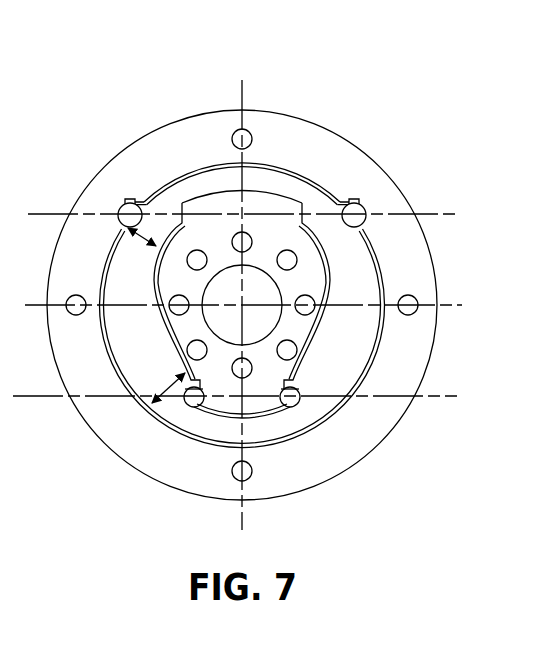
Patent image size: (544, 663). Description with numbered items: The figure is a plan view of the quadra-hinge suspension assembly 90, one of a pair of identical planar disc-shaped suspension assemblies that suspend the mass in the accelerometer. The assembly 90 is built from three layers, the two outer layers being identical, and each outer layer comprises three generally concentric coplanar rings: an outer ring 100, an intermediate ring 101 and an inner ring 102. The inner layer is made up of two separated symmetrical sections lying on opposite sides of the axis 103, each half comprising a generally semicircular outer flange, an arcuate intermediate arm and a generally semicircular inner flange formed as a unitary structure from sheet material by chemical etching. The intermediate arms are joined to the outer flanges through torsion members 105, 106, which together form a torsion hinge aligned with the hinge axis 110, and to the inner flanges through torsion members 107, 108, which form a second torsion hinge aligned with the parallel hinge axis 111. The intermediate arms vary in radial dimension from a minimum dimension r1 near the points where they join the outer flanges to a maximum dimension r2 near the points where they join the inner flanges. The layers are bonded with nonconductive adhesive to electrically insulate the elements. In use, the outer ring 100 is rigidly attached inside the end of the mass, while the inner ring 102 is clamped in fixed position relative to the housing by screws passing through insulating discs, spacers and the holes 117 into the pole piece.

The suspension assembly 90 is at (360, 116).
The outer ring 100 is at (403, 193).
The intermediate ring 101 is at (370, 373).
The inner ring 102 is at (320, 250).
The axis 103 is at (243, 88).
The torsion member 105 is at (130, 199).
The torsion member 106 is at (355, 199).
The torsion member 107 is at (194, 408).
The torsion member 108 is at (290, 408).
The hinge axis 110 is at (428, 214).
The hinge axis 111 is at (43, 396).
The holes 117 is at (315, 307).
The minimum radial dimension r1 is at (141, 240).
The maximum radial dimension r2 is at (165, 387).